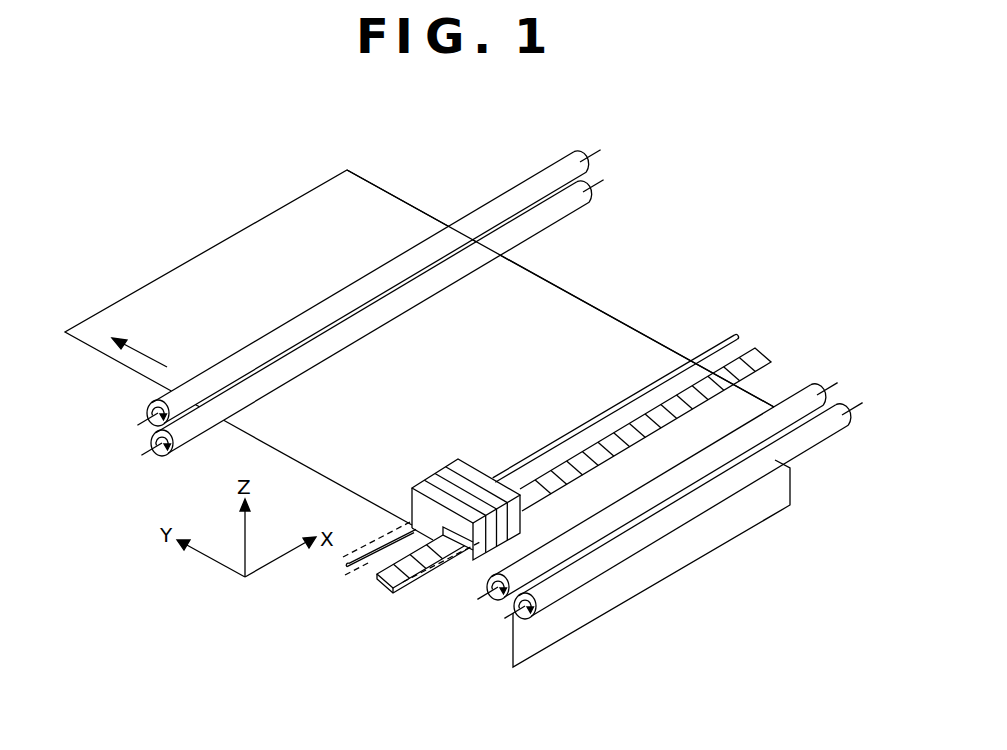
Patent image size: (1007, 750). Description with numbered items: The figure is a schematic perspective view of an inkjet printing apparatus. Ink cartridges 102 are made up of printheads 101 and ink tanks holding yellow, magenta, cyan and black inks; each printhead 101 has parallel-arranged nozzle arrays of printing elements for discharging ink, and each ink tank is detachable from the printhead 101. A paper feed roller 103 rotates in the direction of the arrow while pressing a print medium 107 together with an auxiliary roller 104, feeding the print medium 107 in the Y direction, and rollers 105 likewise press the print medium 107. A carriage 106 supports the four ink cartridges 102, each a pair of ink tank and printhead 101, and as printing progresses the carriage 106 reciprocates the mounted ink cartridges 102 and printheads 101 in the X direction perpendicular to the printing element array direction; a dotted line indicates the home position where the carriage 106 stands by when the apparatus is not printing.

The printhead 101 is at (348, 567).
The ink cartridge 102 is at (434, 472).
The paper feed roller 103 is at (533, 190).
The auxiliary roller 104 is at (554, 214).
The rollers 105 is at (803, 400).
The carriage 106 is at (483, 547).
The print medium 107 is at (370, 196).